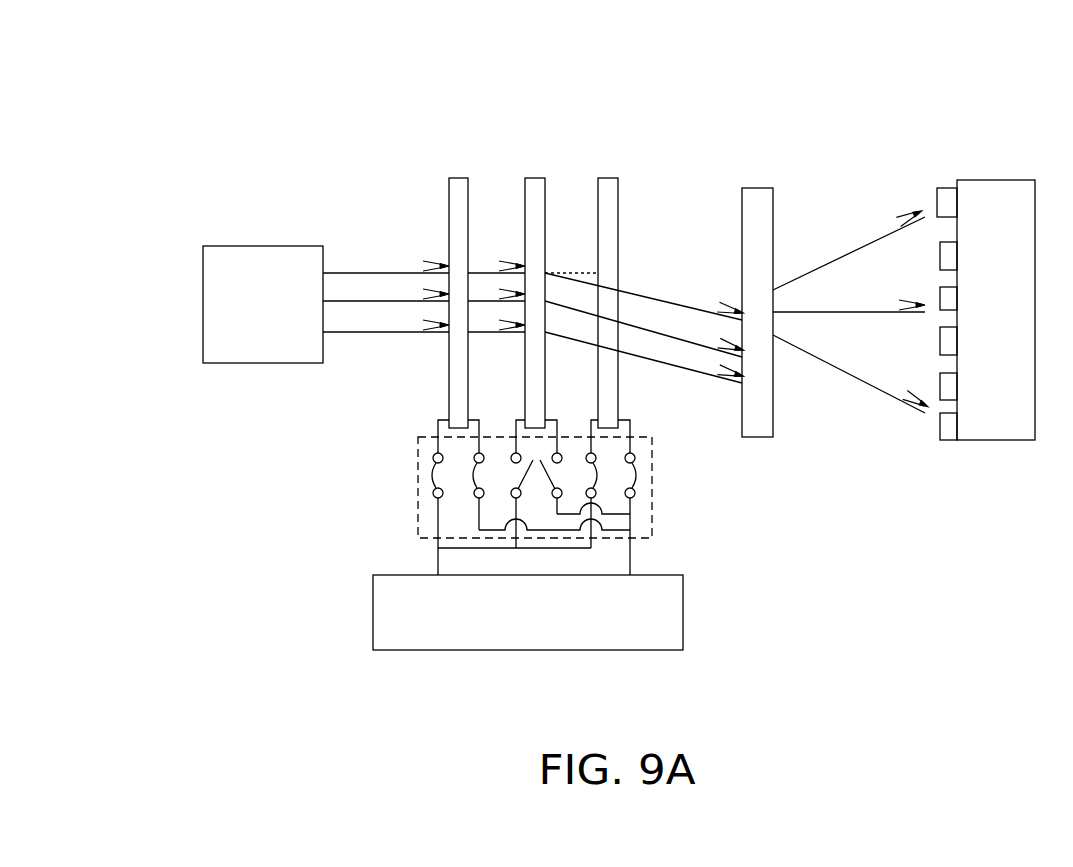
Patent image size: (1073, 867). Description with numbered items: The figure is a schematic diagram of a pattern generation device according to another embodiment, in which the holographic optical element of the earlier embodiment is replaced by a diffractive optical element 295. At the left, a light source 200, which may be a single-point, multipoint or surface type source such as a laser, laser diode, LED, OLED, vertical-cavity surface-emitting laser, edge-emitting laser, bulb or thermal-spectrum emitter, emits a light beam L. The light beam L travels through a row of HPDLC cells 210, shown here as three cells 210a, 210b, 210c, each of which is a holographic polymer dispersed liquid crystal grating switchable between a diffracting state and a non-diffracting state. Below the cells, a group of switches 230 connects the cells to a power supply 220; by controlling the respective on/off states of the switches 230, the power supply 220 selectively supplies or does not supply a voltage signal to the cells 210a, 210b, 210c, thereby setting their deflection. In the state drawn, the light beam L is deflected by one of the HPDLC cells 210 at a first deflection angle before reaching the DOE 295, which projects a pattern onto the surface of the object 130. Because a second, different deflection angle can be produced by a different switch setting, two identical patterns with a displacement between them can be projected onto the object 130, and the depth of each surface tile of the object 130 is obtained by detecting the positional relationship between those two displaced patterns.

The light source 200 is at (262, 246).
The light beam L is at (624, 315).
The HPDLC cells 210 is at (542, 214).
The HPDLC cell 210a is at (460, 178).
The HPDLC cell 210b is at (538, 178).
The HPDLC cell 210c is at (632, 244).
The diffractive optical element 295 is at (755, 188).
The object 130 is at (996, 180).
The switches 230 is at (652, 495).
The power supply 220 is at (683, 613).